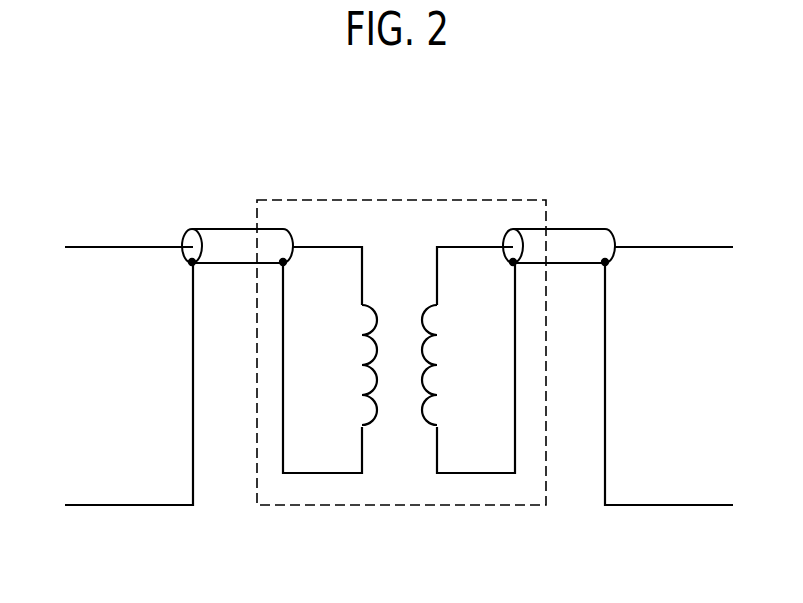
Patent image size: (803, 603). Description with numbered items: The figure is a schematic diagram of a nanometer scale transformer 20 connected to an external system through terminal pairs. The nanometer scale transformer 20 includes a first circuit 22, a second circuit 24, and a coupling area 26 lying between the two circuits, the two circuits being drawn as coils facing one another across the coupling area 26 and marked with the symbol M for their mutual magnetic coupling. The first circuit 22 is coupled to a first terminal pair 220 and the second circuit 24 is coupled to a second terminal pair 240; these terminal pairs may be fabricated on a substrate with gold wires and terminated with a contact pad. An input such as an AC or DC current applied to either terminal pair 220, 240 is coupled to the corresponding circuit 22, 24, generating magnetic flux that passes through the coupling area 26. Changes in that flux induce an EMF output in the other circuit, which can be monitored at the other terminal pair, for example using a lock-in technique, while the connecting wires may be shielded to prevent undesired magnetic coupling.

The nanometer scale transformer 20 is at (400, 200).
The first circuit 22 is at (322, 475).
The second circuit 24 is at (472, 475).
The coupling area 26 is at (398, 447).
The mutual inductance M is at (364, 302).
The first terminal pair 220 is at (65, 250).
The second terminal pair 240 is at (735, 250).